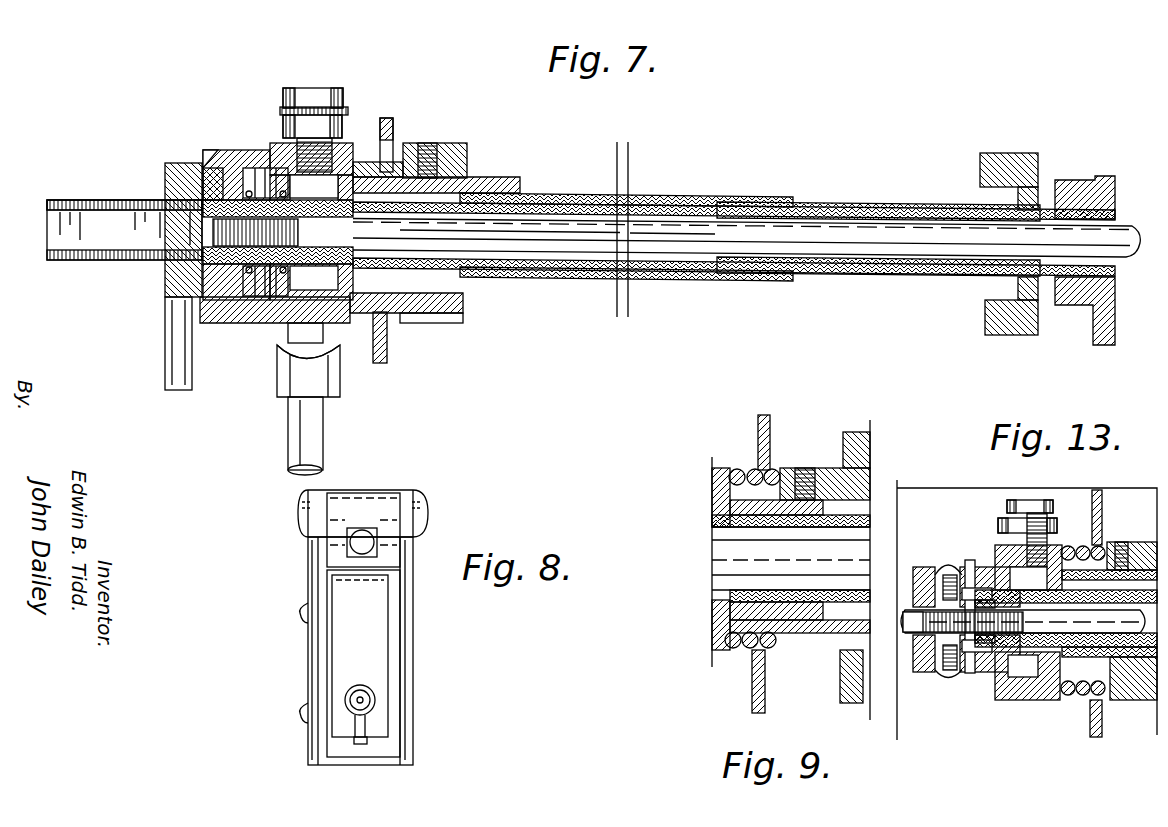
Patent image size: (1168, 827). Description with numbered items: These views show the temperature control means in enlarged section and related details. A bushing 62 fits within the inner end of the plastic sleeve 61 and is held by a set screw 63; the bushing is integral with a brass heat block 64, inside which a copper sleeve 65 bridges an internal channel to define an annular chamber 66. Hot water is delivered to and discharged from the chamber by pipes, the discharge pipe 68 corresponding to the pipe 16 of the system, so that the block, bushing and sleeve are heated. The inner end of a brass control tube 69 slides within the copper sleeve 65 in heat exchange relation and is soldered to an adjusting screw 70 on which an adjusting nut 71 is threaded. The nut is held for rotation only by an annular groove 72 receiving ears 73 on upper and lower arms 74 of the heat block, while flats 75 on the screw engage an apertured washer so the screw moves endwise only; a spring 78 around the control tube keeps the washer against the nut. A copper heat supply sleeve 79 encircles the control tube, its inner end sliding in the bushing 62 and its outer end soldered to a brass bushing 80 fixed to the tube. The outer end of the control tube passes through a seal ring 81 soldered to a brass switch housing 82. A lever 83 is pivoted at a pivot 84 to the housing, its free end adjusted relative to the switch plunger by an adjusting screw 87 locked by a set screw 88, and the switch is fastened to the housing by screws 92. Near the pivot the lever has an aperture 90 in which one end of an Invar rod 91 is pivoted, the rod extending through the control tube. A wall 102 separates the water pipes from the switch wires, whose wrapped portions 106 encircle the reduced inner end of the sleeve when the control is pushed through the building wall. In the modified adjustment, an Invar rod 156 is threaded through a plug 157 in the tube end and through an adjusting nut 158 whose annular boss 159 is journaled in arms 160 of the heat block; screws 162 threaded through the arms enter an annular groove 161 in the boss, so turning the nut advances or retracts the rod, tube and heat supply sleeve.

In FIG. 7, the pipe 16 is at (206, 318).
In FIG. 7, the sleeve 61 is at (452, 143).
In FIG. 13, the sleeve 61 is at (1145, 538).
In FIG. 7, the bushing 62 is at (472, 182).
In FIG. 13, the bushing 62 is at (1125, 698).
In FIG. 9, the set screw 63 is at (805, 468).
In FIG. 7, the heat block 64 is at (285, 140).
In FIG. 13, the heat block 64 is at (998, 550).
In FIG. 7, the copper sleeve 65 is at (310, 272).
In FIG. 13, the copper sleeve 65 is at (1010, 660).
In FIG. 7, the annular chamber 66 is at (311, 237).
In FIG. 13, the annular chamber 66 is at (1028, 578).
In FIG. 7, the pipe 68 is at (288, 447).
In FIG. 7, the control tube 69 is at (557, 227).
In FIG. 9, the control tube 69 is at (725, 522).
In FIG. 13, the control tube 69 is at (1035, 650).
In FIG. 7, the adjusting screw 70 is at (80, 258).
In FIG. 7, the adjusting nut 71 is at (168, 178).
In FIG. 7, the annular groove 72 is at (205, 170).
In FIG. 7, the ears 73 is at (208, 152).
In FIG. 7, the arms 74 is at (212, 150).
In FIG. 7, the flats 75 is at (60, 213).
In FIG. 7, the spring 78 is at (250, 320).
In FIG. 7, the heat supply sleeve 79 is at (496, 194).
In FIG. 13, the heat supply sleeve 79 is at (1140, 660).
In FIG. 7, the brass bushing 80 is at (795, 206).
In FIG. 7, the seal ring 81 is at (1016, 207).
In FIG. 7, the switch housing 82 is at (1078, 180).
In FIG. 8, the switch housing 82 is at (310, 568).
In FIG. 8, the lever 83 is at (375, 642).
In FIG. 8, the pivot 84 is at (408, 508).
In FIG. 8, the adjusting screw 87 is at (366, 700).
In FIG. 8, the set screw 88 is at (360, 744).
In FIG. 8, the aperture 90 is at (362, 528).
In FIG. 7, the Invar rod 91 is at (746, 238).
In FIG. 9, the Invar rod 91 is at (712, 550).
In FIG. 8, the screws 92 is at (300, 610).
In FIG. 7, the wall 102 is at (388, 118).
In FIG. 9, the wall 102 is at (772, 428).
In FIG. 13, the wall 102 is at (1104, 518).
In FIG. 9, the wrapped wires 106 is at (738, 468).
In FIG. 13, the wrapped wires 106 is at (1082, 696).
In FIG. 13, the Invar rod 156 is at (1023, 618).
In FIG. 13, the plug 157 is at (995, 670).
In FIG. 13, the adjusting nut 158 is at (925, 672).
In FIG. 13, the annular boss 159 is at (985, 665).
In FIG. 13, the arms 160 is at (965, 565).
In FIG. 13, the annular groove 161 is at (918, 632).
In FIG. 13, the screws 162 is at (945, 560).